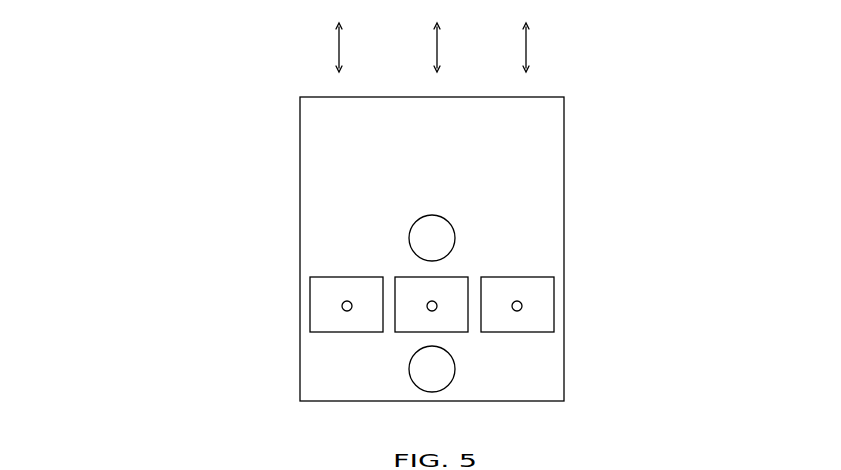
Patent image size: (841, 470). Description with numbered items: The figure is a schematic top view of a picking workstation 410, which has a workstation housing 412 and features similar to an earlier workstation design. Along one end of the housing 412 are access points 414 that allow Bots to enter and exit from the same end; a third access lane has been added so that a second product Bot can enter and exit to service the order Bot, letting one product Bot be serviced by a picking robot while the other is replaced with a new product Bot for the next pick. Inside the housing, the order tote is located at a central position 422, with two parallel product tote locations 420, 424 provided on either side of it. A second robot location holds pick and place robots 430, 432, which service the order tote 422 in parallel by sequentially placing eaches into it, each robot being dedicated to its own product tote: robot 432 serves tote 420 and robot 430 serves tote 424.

The picking workstation 410 is at (382, 229).
The workstation housing 412 is at (560, 199).
The access points 414 is at (531, 62).
The product tote location 420 is at (307, 293).
The order tote position 422 is at (408, 332).
The product tote location 424 is at (548, 317).
The pick and place robot 430 is at (408, 237).
The pick and place robot 432 is at (453, 366).